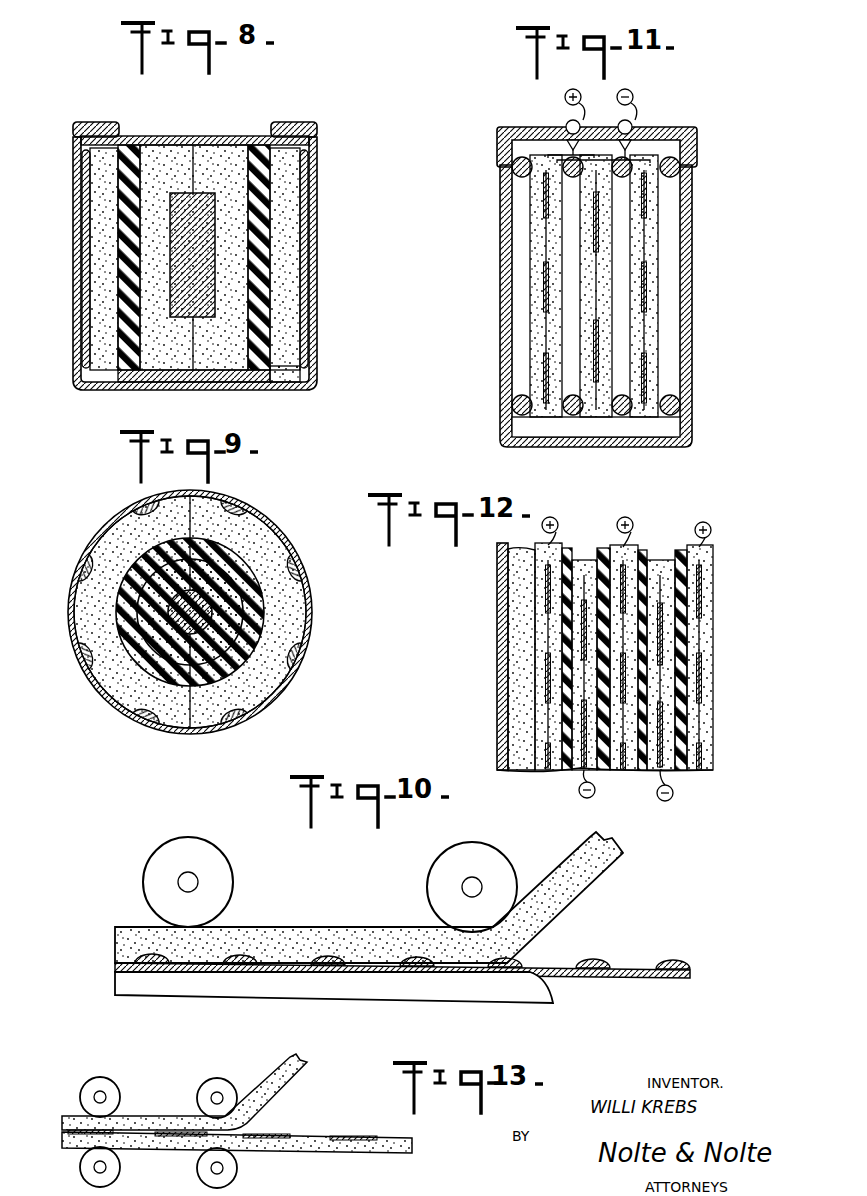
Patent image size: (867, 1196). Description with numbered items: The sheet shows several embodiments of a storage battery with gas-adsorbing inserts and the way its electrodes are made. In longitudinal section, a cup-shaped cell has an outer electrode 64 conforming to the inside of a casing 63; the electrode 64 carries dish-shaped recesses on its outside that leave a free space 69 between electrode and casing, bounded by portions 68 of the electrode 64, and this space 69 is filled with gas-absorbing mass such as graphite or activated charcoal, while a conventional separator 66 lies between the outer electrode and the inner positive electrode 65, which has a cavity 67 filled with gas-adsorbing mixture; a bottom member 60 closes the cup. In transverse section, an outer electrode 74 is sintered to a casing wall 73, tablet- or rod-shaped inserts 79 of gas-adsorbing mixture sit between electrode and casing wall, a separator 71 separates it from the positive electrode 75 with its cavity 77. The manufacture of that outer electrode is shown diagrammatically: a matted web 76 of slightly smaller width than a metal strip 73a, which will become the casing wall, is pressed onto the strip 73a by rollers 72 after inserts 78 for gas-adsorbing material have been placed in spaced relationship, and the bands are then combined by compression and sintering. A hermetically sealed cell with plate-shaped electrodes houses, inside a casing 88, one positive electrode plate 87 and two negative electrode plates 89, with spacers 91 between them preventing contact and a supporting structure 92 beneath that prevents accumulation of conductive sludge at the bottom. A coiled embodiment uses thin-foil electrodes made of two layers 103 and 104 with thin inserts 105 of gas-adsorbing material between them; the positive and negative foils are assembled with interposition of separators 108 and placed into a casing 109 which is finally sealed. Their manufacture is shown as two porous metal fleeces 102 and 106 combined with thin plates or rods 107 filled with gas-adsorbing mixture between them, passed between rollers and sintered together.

In FIG. 8, the bottom plate 60 is at (212, 388).
In FIG. 8, the casing 63 is at (75, 258).
In FIG. 8, the outer electrode 64 is at (283, 250).
In FIG. 8, the positive electrode 65 is at (230, 162).
In FIG. 8, the separator 66 is at (128, 318).
In FIG. 8, the cavity 67 is at (200, 268).
In FIG. 8, the portions of electrode 68 is at (290, 372).
In FIG. 8, the free space 69 is at (303, 215).
In FIG. 9, the separator 71 is at (200, 686).
In FIG. 10, the rollers 72 is at (233, 883).
In FIG. 9, the casing wall 73 is at (103, 532).
In FIG. 10, the metal strip 73a is at (630, 980).
In FIG. 9, the outer electrode 74 is at (95, 603).
In FIG. 9, the positive electrode 75 is at (220, 633).
In FIG. 10, the matted web 76 is at (558, 870).
In FIG. 9, the cavity 77 is at (219, 590).
In FIG. 10, the inserts 78 is at (615, 970).
In FIG. 9, the inserts 79 is at (295, 567).
In FIG. 11, the positive electrode plate 87 is at (598, 414).
In FIG. 11, the casing 88 is at (690, 280).
In FIG. 11, the negative electrode plates 89 is at (545, 320).
In FIG. 11, the spacers 91 is at (573, 417).
In FIG. 11, the supporting structure 92 is at (648, 427).
In FIG. 13, the porous metal fleece 102 is at (263, 1080).
In FIG. 12, the electrode layer 103 is at (542, 772).
In FIG. 12, the electrode layer 104 is at (568, 772).
In FIG. 12, the inserts 105 is at (546, 570).
In FIG. 13, the porous metal fleece 106 is at (303, 1153).
In FIG. 13, the plates or rods 107 is at (327, 1105).
In FIG. 12, the separators 108 is at (567, 548).
In FIG. 12, the casing 109 is at (500, 610).